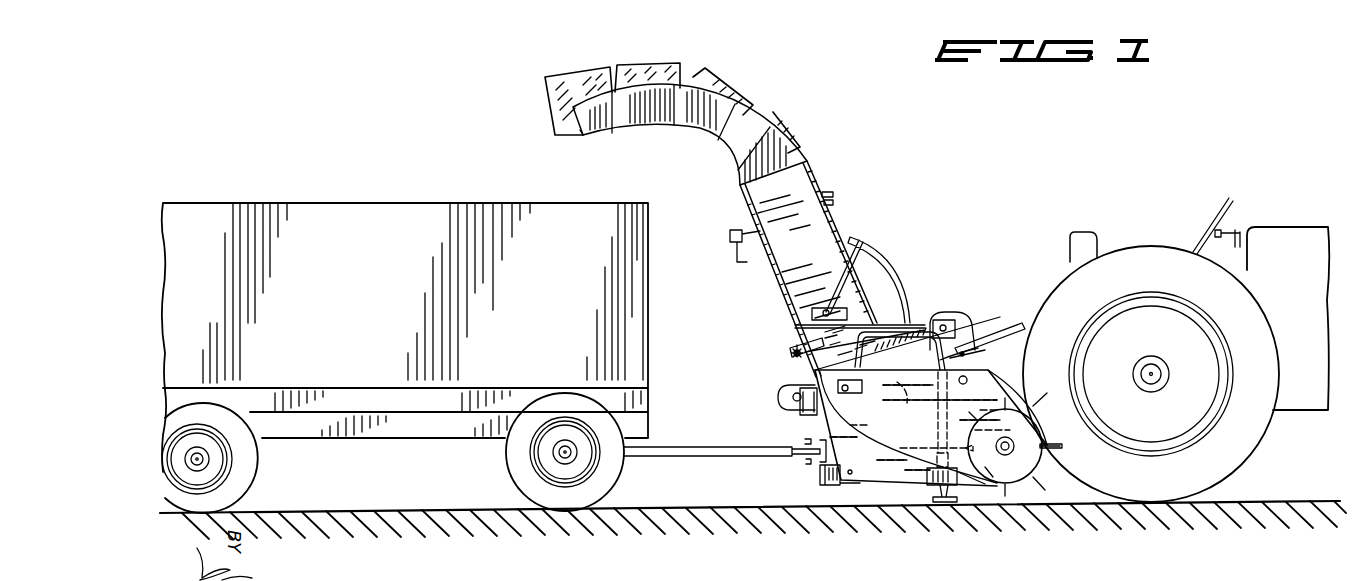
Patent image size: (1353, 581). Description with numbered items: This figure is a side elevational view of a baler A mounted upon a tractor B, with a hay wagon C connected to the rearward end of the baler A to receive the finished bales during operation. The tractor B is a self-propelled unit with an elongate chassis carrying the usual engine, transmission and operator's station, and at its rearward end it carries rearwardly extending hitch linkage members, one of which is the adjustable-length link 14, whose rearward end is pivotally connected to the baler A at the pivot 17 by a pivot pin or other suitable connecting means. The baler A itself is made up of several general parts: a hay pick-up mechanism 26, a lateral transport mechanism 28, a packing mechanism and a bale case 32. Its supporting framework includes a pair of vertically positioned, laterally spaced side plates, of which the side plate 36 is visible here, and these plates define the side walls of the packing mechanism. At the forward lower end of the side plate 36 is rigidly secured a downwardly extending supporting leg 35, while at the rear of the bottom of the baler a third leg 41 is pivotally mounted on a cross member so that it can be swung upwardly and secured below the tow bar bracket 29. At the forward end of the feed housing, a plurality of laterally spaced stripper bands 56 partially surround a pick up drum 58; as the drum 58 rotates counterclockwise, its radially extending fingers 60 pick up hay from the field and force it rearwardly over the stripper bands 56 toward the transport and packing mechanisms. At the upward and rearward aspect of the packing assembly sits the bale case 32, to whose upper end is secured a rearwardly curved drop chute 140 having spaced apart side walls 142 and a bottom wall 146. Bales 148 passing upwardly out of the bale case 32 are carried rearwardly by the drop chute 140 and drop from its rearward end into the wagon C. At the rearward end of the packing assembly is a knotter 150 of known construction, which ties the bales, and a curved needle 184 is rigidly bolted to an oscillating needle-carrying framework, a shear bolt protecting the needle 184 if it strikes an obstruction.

The hitch linkage member 14 is at (1010, 330).
The pivotal connection 17 is at (970, 355).
The hay pick-up mechanism 26 is at (993, 487).
The lateral transport mechanism 28 is at (963, 353).
The tow bar bracket 29 is at (797, 442).
The bale case 32 is at (766, 289).
The supporting leg 35 is at (930, 490).
The side plate 36 is at (940, 313).
The third leg 41 is at (827, 487).
The stripper bands 56 is at (1005, 487).
The pick up drum 58 is at (1030, 410).
The radially extending fingers 60 is at (1057, 447).
The drop chute 140 is at (583, 135).
The side walls 142 is at (713, 133).
The bottom wall 146 is at (655, 130).
The bales 148 is at (772, 118).
The knotter 150 is at (787, 408).
The curved needle 184 is at (890, 260).
The baler A is at (766, 325).
The tractor B is at (1165, 235).
The hay wagon C is at (401, 195).